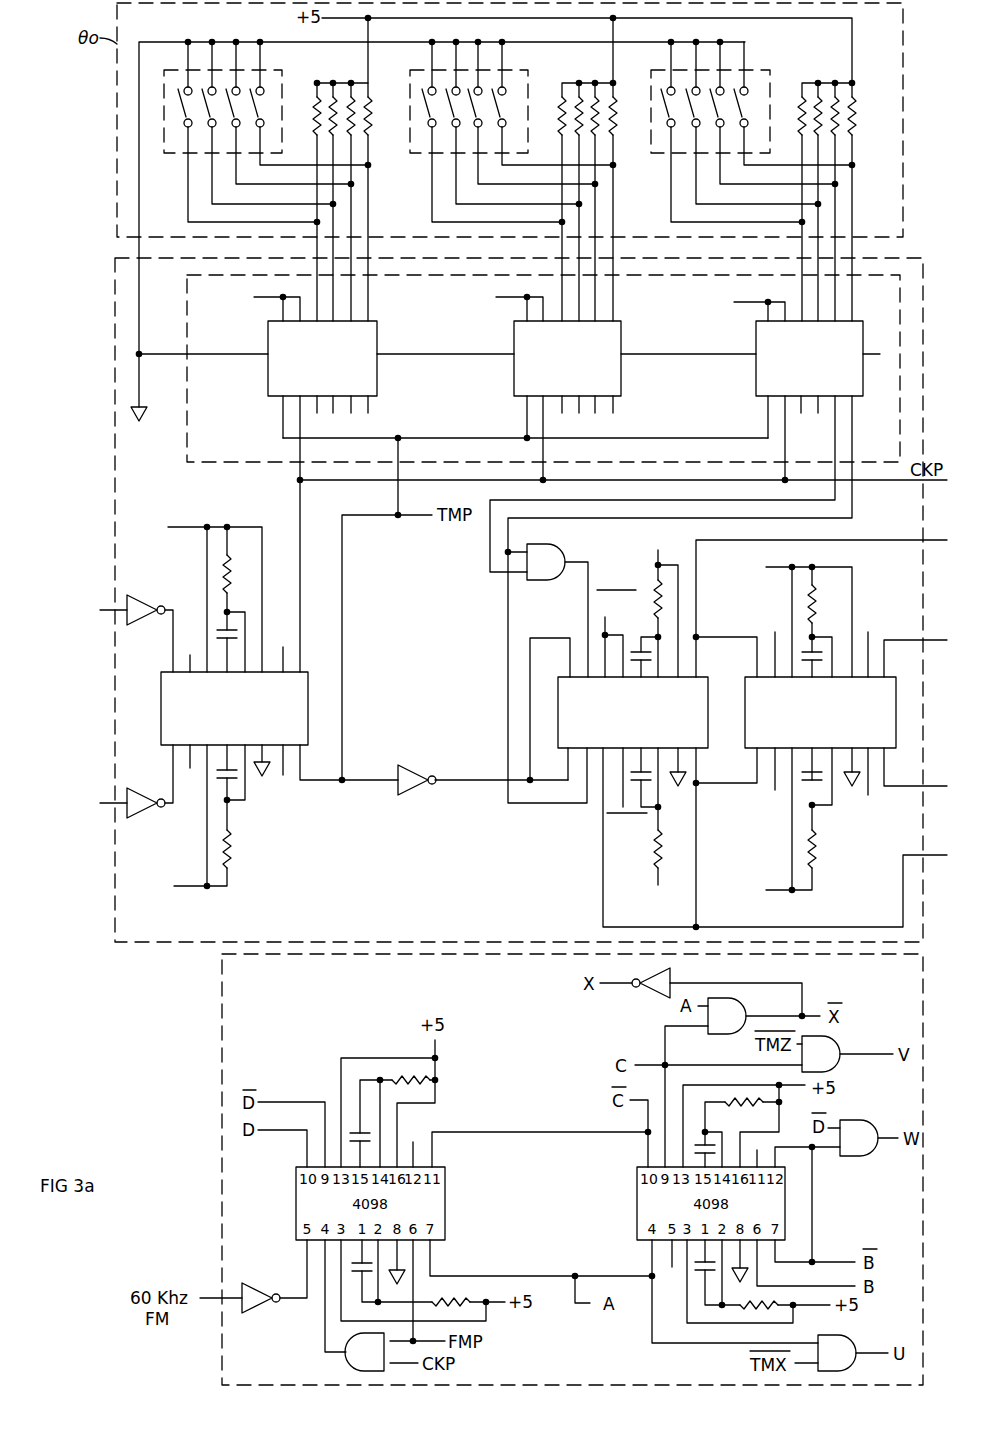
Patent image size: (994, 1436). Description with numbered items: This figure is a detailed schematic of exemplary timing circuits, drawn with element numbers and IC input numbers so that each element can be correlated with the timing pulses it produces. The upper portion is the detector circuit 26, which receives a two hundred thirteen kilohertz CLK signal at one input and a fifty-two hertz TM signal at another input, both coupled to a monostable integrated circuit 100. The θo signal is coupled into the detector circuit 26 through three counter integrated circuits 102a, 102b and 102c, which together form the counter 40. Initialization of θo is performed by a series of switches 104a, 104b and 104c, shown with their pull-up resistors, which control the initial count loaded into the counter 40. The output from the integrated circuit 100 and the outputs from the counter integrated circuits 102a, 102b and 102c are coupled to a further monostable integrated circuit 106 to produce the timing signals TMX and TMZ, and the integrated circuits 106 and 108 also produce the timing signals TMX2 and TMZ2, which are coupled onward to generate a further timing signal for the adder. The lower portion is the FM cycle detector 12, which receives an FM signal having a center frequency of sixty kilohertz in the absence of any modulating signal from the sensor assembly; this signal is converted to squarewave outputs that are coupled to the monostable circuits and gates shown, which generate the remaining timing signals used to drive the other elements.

The FM cycle detector 12 is at (222, 1004).
The detector circuit 26 is at (115, 447).
The counter 40 is at (197, 460).
The 4098 integrated circuit 100 is at (170, 672).
The 4029 integrated circuit 102a is at (377, 388).
The 4029 integrated circuit 102b is at (621, 388).
The 4029 integrated circuit 102c is at (756, 388).
The switch 104a is at (282, 78).
The switch 104b is at (528, 78).
The switch 104c is at (770, 96).
The 4098 integrated circuit 106 is at (698, 678).
The 4098 integrated circuit 108 is at (757, 752).